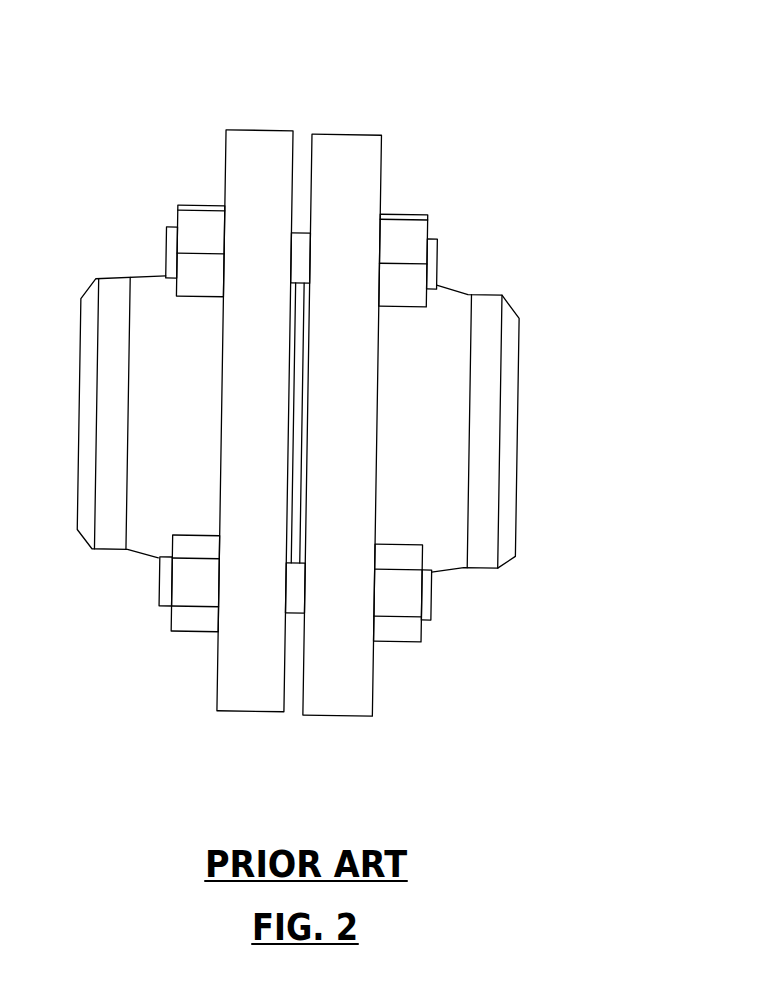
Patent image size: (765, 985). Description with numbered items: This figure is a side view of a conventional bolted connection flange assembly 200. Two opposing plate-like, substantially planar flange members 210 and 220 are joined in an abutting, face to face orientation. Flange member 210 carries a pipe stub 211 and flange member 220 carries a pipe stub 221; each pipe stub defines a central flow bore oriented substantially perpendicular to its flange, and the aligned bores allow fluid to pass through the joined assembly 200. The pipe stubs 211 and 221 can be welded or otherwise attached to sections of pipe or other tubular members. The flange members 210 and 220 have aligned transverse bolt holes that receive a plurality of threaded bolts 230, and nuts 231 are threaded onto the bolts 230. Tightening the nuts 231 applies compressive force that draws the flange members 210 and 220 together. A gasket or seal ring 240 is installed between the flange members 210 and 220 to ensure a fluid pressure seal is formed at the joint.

The connection flange assembly 200 is at (404, 143).
The flange member 210 is at (225, 692).
The flange member 220 is at (357, 692).
The pipe stub 211 is at (117, 290).
The pipe stub 221 is at (487, 570).
The threaded bolts 230 is at (162, 237).
The nuts 231 is at (197, 288).
The gasket or seal ring 240 is at (295, 503).